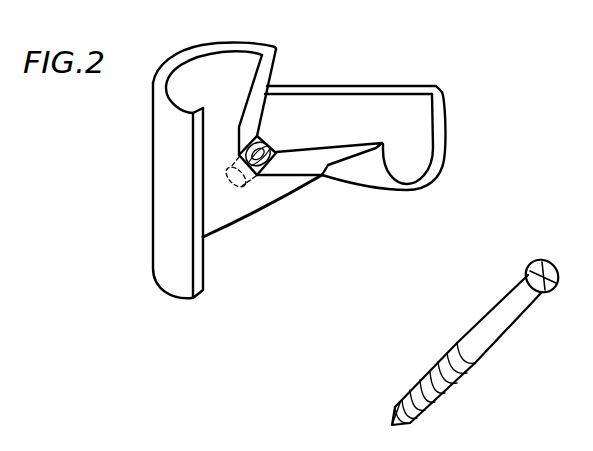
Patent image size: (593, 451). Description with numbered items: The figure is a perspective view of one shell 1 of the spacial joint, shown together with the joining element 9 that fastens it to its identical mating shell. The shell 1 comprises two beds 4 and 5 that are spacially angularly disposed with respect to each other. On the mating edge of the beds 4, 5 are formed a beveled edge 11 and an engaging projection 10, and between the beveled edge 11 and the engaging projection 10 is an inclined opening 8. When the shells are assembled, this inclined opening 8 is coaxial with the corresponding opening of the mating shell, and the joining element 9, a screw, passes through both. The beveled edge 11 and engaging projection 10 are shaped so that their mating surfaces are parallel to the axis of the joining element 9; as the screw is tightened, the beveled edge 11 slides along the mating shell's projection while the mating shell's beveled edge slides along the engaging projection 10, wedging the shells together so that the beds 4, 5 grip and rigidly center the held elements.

The shell 1 is at (346, 135).
The bed 4 is at (360, 180).
The bed 5 is at (171, 225).
The inclined opening 8 is at (234, 192).
The joining element 9 is at (505, 320).
The engaging projection 10 is at (283, 187).
The beveled edge 11 is at (268, 80).